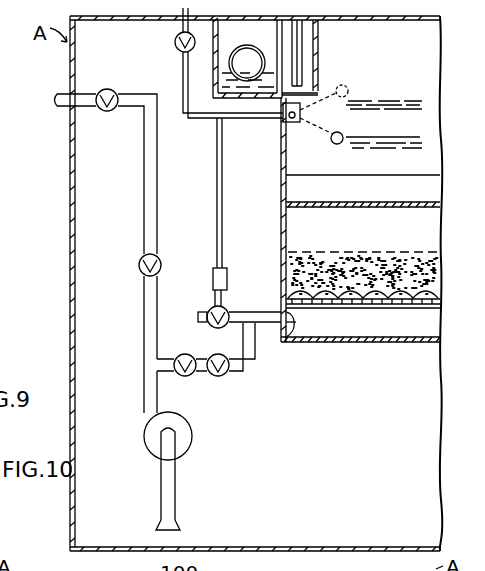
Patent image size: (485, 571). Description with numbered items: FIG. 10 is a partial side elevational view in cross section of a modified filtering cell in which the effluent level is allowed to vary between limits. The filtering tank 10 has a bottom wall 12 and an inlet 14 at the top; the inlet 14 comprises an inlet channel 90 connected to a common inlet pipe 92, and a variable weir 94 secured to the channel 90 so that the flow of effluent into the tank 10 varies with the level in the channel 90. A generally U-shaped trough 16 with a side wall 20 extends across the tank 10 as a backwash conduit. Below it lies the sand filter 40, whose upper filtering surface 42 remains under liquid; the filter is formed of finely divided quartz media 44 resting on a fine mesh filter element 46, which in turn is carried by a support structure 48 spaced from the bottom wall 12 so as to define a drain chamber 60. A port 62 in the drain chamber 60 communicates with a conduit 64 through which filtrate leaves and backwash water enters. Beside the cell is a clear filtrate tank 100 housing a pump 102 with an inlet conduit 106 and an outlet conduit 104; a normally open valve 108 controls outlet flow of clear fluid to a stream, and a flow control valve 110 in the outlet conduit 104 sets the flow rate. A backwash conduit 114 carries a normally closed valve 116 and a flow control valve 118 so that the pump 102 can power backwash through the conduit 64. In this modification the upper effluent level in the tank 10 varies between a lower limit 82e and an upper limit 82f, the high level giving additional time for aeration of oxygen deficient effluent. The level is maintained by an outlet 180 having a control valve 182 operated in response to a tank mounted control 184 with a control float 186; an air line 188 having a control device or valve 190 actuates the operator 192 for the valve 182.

The filtering tank 10 is at (437, 45).
The bottom wall 12 is at (378, 338).
The inlet 14 is at (319, 40).
The backwash conduit trough 16 is at (397, 173).
The side wall of trough 20 is at (430, 187).
The sand filter 40 is at (427, 270).
The upper filtering surface 42 is at (427, 252).
The media 44 is at (379, 258).
The fine mesh filter element 46 is at (434, 293).
The support structure 48 is at (421, 311).
The drain chamber 60 is at (339, 327).
The outlet or inlet port 62 is at (285, 336).
The conduit 64 is at (265, 309).
The lower effluent level limit 82e is at (368, 146).
The upper effluent level limit 82f is at (370, 101).
The inlet channel 90 is at (213, 50).
The common inlet pipe 92 is at (234, 50).
The variable weir 94 is at (302, 86).
The filtrate tank 100 is at (79, 76).
The pump 102 is at (192, 436).
The outlet conduit 104 is at (143, 155).
The inlet conduit 106 is at (176, 495).
The normally open valve 108 is at (112, 82).
The flow control valve 110 is at (139, 262).
The backwash conduit 114 is at (203, 358).
The normally closed valve 116 is at (217, 377).
The flow control valve 118 is at (188, 377).
The outlet 180 is at (204, 320).
The control valve 182 is at (215, 305).
The tank mounted control 184 is at (296, 123).
The control float 186 is at (322, 112).
The air line 188 is at (222, 168).
The control device or valve 190 is at (175, 42).
The operator 192 is at (227, 278).